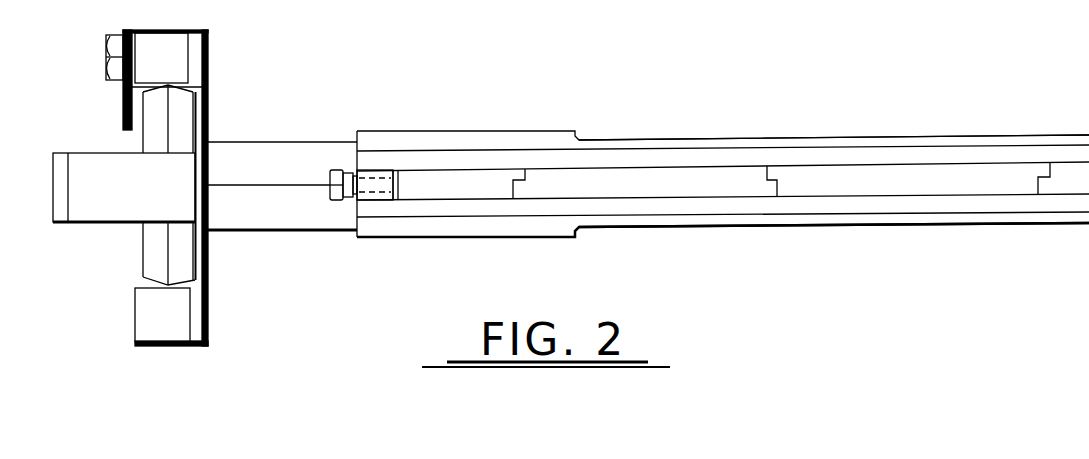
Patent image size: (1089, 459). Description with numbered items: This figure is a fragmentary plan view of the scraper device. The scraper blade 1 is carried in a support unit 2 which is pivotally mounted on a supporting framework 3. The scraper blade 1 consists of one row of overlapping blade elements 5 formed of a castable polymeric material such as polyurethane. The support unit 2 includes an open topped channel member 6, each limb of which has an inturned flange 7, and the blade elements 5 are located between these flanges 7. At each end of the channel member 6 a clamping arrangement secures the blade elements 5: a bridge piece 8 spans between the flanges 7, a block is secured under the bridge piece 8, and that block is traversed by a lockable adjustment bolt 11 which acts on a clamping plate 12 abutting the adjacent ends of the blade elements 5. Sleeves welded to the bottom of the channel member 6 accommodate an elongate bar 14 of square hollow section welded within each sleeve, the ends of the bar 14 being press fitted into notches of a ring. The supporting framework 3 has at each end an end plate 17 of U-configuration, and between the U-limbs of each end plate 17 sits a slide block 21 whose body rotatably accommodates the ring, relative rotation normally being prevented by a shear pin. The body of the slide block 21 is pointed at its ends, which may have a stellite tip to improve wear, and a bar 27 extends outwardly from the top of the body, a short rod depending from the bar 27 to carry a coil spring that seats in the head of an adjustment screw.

The scraper blade 1 is at (870, 130).
The support unit 2 is at (268, 156).
The supporting framework 3 is at (214, 252).
The blade elements 5 is at (750, 185).
The channel member 6 is at (712, 137).
The inturned flange 7 is at (778, 160).
The bridge piece 8 is at (383, 172).
The lockable adjustment bolt 11 is at (352, 170).
The clamping plate 12 is at (398, 170).
The elongate bar 14 is at (323, 155).
The end plate 17 is at (158, 356).
The slide block 21 is at (135, 261).
The bar 27 is at (117, 170).